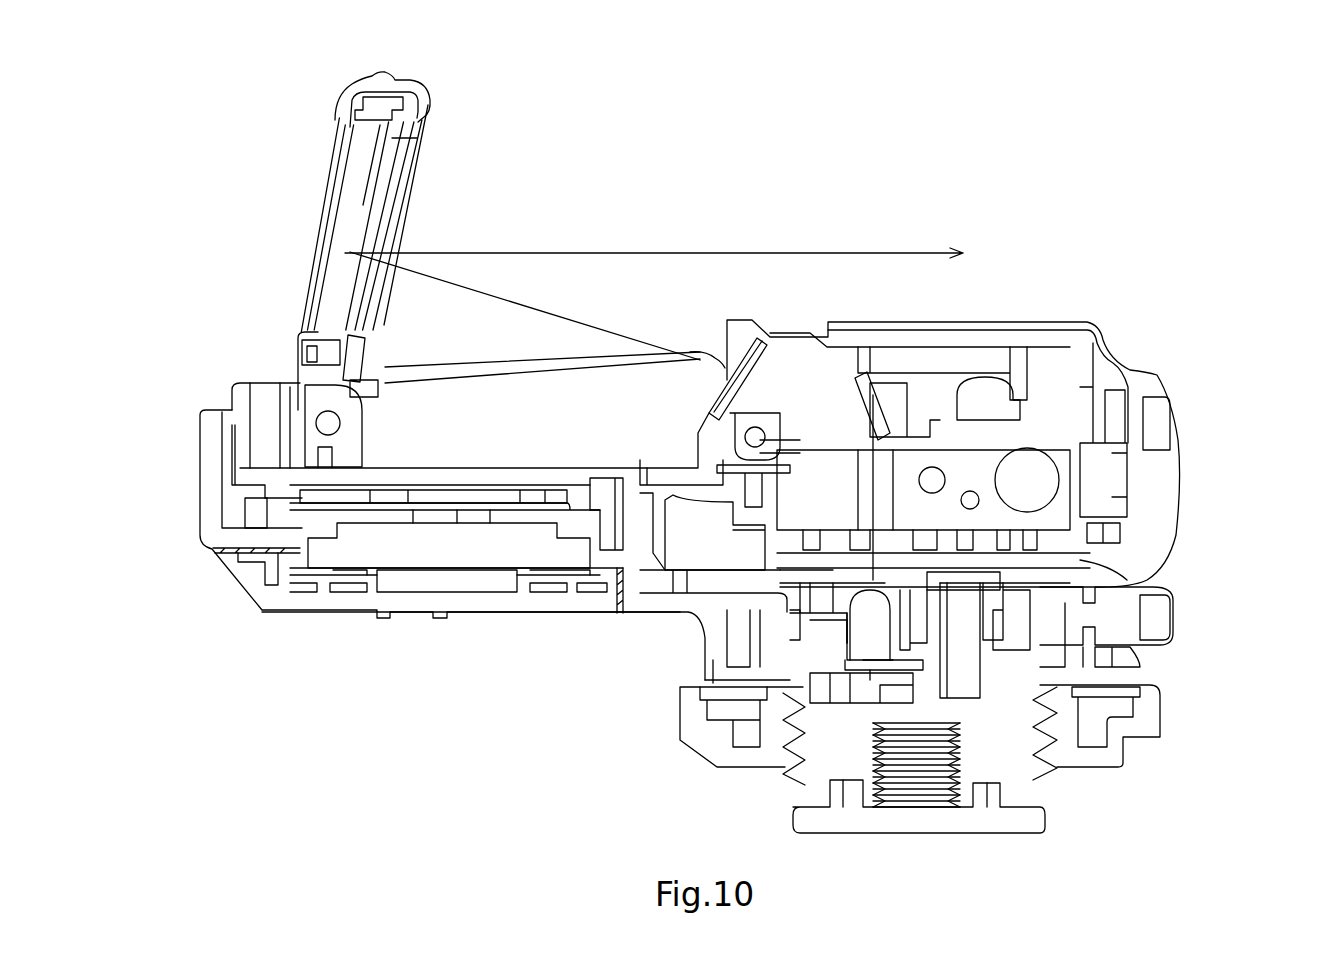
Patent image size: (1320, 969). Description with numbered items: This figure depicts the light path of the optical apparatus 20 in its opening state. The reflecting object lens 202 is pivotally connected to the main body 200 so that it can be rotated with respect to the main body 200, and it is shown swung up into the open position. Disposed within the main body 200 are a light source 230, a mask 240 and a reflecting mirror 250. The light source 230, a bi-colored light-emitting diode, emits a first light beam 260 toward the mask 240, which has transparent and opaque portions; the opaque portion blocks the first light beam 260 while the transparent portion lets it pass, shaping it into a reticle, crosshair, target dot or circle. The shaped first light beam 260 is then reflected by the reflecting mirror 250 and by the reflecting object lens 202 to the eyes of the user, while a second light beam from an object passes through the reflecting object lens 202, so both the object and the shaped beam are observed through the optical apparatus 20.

The optical apparatus 20 is at (78, 66).
The main body 200 is at (408, 600).
The reflecting object lens 202 is at (340, 250).
The light source 230 is at (863, 645).
The mask 240 is at (927, 572).
The reflecting mirror 250 is at (862, 380).
The first light beam 260 is at (636, 338).